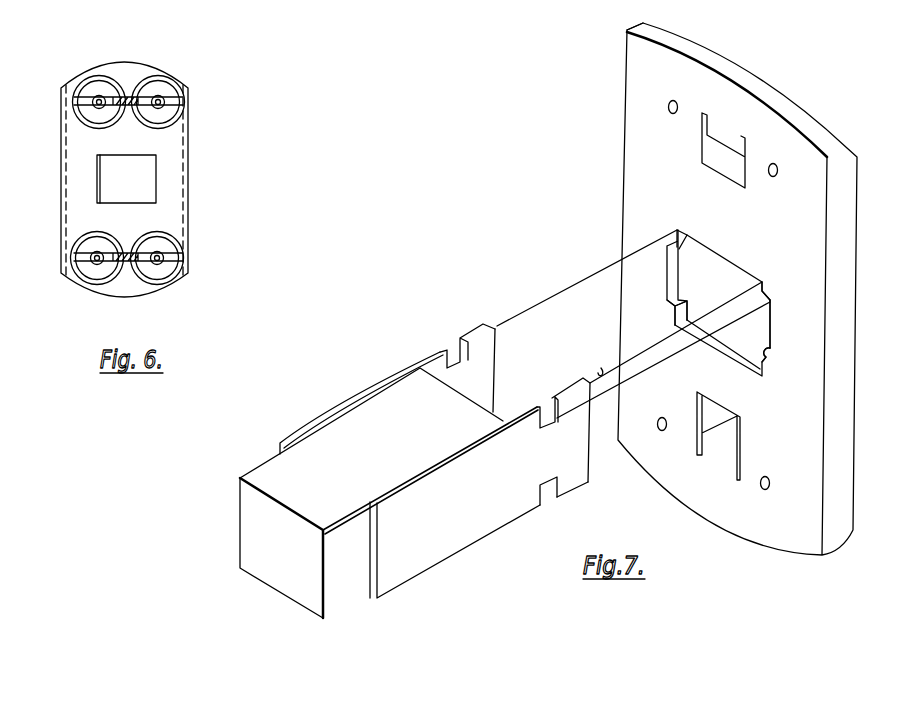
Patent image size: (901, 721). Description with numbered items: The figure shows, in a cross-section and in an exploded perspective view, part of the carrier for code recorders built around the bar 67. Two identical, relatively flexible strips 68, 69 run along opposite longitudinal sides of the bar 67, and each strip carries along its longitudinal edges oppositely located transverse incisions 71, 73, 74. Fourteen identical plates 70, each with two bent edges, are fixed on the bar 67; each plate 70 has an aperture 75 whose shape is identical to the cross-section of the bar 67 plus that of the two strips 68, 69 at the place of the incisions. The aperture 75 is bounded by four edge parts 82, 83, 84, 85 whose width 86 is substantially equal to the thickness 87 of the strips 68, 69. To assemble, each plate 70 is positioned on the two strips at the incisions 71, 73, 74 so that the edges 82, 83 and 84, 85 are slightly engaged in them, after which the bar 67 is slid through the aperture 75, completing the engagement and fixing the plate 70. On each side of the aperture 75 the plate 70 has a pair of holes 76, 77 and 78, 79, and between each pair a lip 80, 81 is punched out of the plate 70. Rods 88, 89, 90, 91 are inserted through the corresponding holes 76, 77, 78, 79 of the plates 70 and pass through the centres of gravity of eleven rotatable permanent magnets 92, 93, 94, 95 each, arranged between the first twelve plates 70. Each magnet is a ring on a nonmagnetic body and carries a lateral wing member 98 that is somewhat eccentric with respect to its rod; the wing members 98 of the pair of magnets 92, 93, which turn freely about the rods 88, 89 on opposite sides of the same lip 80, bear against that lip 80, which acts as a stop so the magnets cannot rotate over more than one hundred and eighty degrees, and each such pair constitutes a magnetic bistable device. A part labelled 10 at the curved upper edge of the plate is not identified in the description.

In FIG. 7, the cabinet 10 is at (804, 130).
In FIG. 7, the bar 67 is at (246, 475).
In FIG. 7, the flexible strip 68 is at (320, 421).
In FIG. 7, the flexible strip 69 is at (436, 550).
In FIG. 7, the plate 70 is at (737, 289).
In FIG. 7, the incision 71 is at (448, 343).
In FIG. 7, the incision 73 is at (545, 402).
In FIG. 7, the incision 74 is at (550, 502).
In FIG. 6, the aperture 75 is at (138, 180).
In FIG. 7, the aperture 75 is at (708, 259).
In FIG. 7, the hole 76 is at (679, 94).
In FIG. 7, the hole 77 is at (772, 178).
In FIG. 7, the hole 78 is at (662, 431).
In FIG. 7, the hole 79 is at (762, 491).
In FIG. 6, the lip 80 is at (100, 137).
In FIG. 7, the lip 80 is at (712, 150).
In FIG. 6, the lip 81 is at (128, 261).
In FIG. 7, the lip 81 is at (720, 417).
In FIG. 7, the edge part 82 is at (687, 234).
In FIG. 7, the edge part 83 is at (673, 316).
In FIG. 7, the edge part 84 is at (764, 289).
In FIG. 7, the edge part 85 is at (768, 354).
In FIG. 7, the width 86 is at (771, 324).
In FIG. 7, the thickness 87 is at (601, 370).
In FIG. 6, the rod 88 is at (86, 105).
In FIG. 6, the rod 89 is at (163, 108).
In FIG. 6, the rod 90 is at (95, 262).
In FIG. 6, the rod 91 is at (165, 266).
In FIG. 6, the rotatable permanent magnet 92 is at (78, 91).
In FIG. 6, the rotatable permanent magnet 93 is at (165, 86).
In FIG. 6, the rotatable permanent magnet 94 is at (106, 275).
In FIG. 6, the rotatable permanent magnet 95 is at (150, 270).
In FIG. 6, the lateral wing member 98 is at (174, 105).